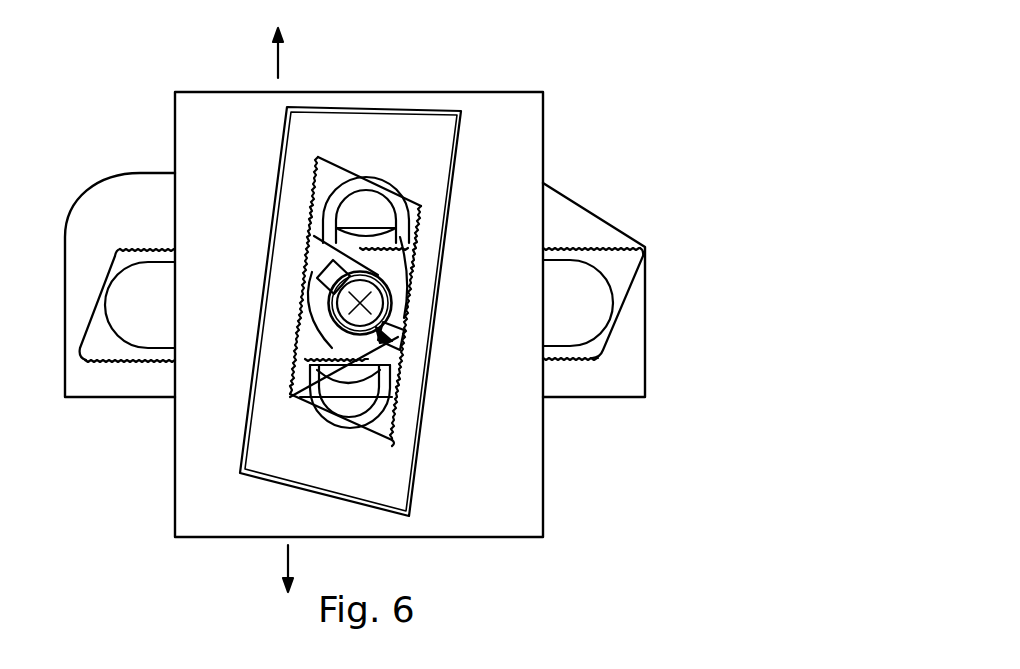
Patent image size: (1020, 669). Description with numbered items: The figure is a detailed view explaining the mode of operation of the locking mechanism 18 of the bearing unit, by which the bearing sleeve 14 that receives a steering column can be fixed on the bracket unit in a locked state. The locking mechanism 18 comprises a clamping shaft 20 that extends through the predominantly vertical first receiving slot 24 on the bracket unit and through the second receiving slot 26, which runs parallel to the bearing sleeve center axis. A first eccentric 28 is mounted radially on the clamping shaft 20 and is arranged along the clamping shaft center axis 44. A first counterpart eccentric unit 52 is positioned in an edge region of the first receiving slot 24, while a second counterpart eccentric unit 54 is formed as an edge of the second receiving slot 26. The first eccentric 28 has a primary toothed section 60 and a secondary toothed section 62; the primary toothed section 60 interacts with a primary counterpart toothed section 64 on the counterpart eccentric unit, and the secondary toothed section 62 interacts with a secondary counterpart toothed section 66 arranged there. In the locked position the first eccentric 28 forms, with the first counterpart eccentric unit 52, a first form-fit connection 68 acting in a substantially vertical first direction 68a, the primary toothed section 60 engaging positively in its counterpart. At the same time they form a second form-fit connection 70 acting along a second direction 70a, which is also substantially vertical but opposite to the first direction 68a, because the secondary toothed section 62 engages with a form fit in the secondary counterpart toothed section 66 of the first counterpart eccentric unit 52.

The bearing sleeve 14 is at (620, 378).
The locking mechanism 18 is at (538, 82).
The clamping shaft 20 is at (370, 278).
The first receiving slot 24 is at (366, 194).
The second receiving slot 26 is at (580, 310).
The first eccentric 28 is at (390, 353).
The clamping shaft center axis 44 is at (392, 318).
The first counterpart eccentric unit 52 is at (417, 150).
The second counterpart eccentric unit 54 is at (598, 242).
The primary toothed section 60 is at (307, 263).
The secondary toothed section 62 is at (413, 350).
The primary counterpart toothed section 64 is at (330, 283).
The secondary counterpart toothed section 66 is at (407, 385).
The first form-fit connection 68 is at (304, 250).
The first direction 68a is at (278, 63).
The second form-fit connection 70 is at (300, 348).
The second direction 70a is at (288, 574).